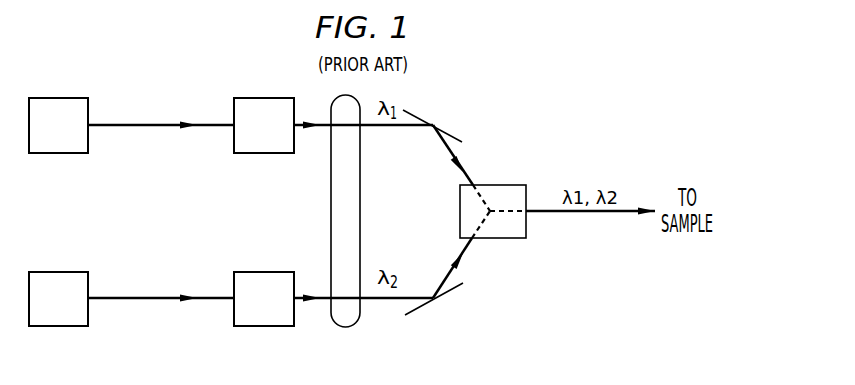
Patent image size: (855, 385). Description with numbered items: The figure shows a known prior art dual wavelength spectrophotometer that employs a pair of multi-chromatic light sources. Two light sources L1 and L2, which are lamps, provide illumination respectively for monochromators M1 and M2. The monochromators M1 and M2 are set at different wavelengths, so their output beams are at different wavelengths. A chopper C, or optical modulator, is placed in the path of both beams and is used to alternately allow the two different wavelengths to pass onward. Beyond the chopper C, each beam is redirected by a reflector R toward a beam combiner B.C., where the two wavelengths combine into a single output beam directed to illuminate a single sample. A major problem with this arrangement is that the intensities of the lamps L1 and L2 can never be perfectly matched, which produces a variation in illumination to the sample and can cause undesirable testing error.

The light source L1 is at (58, 125).
The light source L2 is at (58, 299).
The monochromator M1 is at (264, 125).
The monochromator M2 is at (264, 299).
The chopper C is at (345, 211).
The reflector (mirror) R is at (433, 212).
The beam combiner B.C. is at (493, 211).